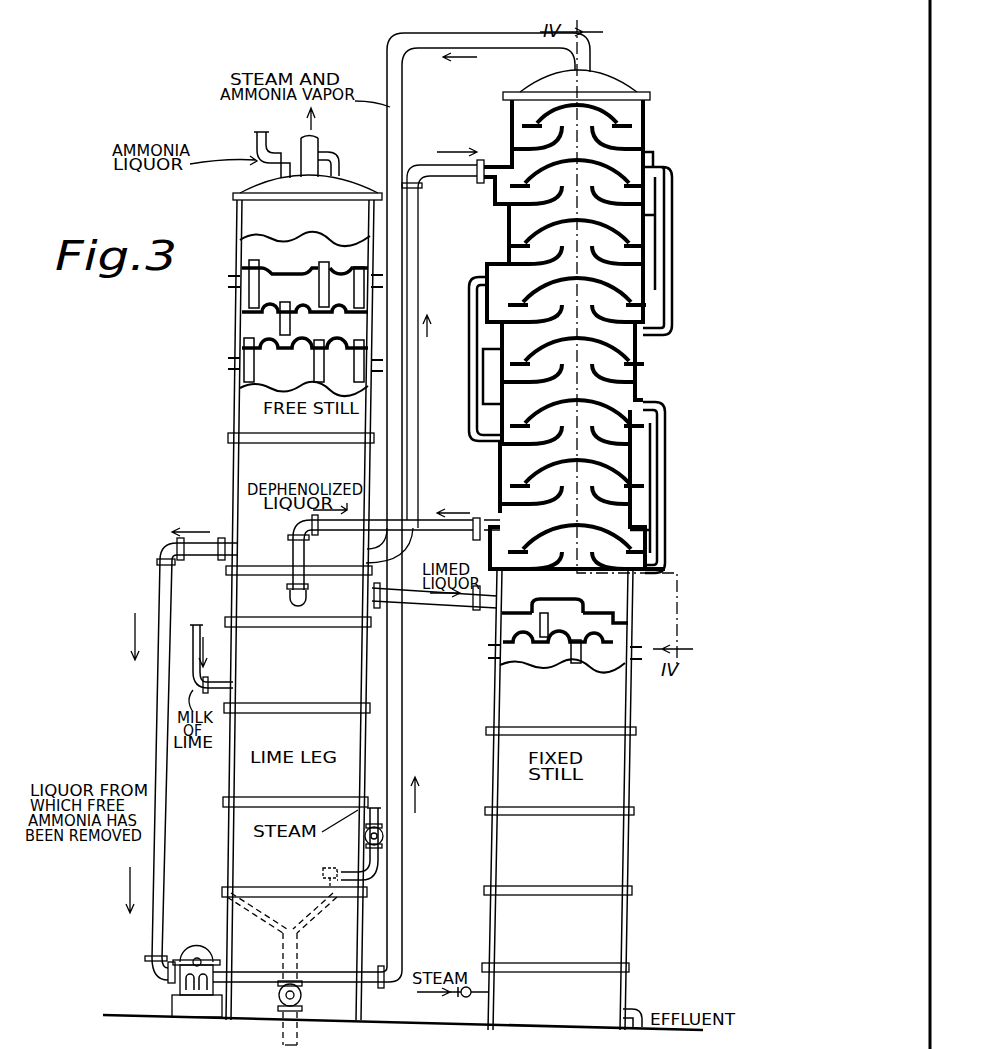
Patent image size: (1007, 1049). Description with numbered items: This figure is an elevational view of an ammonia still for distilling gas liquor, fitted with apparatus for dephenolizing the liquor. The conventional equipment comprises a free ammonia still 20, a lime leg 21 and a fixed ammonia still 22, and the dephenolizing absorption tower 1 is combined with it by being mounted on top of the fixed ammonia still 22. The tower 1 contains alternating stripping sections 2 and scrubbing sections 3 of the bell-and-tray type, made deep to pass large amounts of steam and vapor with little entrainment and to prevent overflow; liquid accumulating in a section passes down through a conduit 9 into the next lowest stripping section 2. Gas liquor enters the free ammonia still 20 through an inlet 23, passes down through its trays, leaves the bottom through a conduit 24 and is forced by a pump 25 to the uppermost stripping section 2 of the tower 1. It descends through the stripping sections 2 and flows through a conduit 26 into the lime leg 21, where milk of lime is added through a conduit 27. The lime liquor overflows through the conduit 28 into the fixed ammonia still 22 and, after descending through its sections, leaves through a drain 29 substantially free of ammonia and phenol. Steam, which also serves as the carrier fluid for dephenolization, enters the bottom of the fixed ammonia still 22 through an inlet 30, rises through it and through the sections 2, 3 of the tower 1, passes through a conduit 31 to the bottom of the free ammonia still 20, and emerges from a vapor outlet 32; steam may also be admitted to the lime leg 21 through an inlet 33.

The absorption tower 1 is at (613, 372).
The stripping section 2 is at (662, 194).
The scrubbing section 3 is at (642, 130).
The conduit 9 is at (661, 247).
The free ammonia still 20 is at (252, 420).
The lime leg 21 is at (362, 693).
The fixed ammonia still 22 is at (622, 717).
The inlet 23 is at (264, 135).
The conduit 24 is at (157, 560).
The pump 25 is at (199, 948).
The conduit 26 is at (430, 513).
The conduit 27 is at (196, 627).
The conduit 28 is at (463, 612).
The drain 29 is at (641, 1015).
The inlet 30 is at (466, 997).
The conduit 31 is at (397, 123).
The vapor outlet 32 is at (319, 140).
The inlet 33 is at (378, 811).